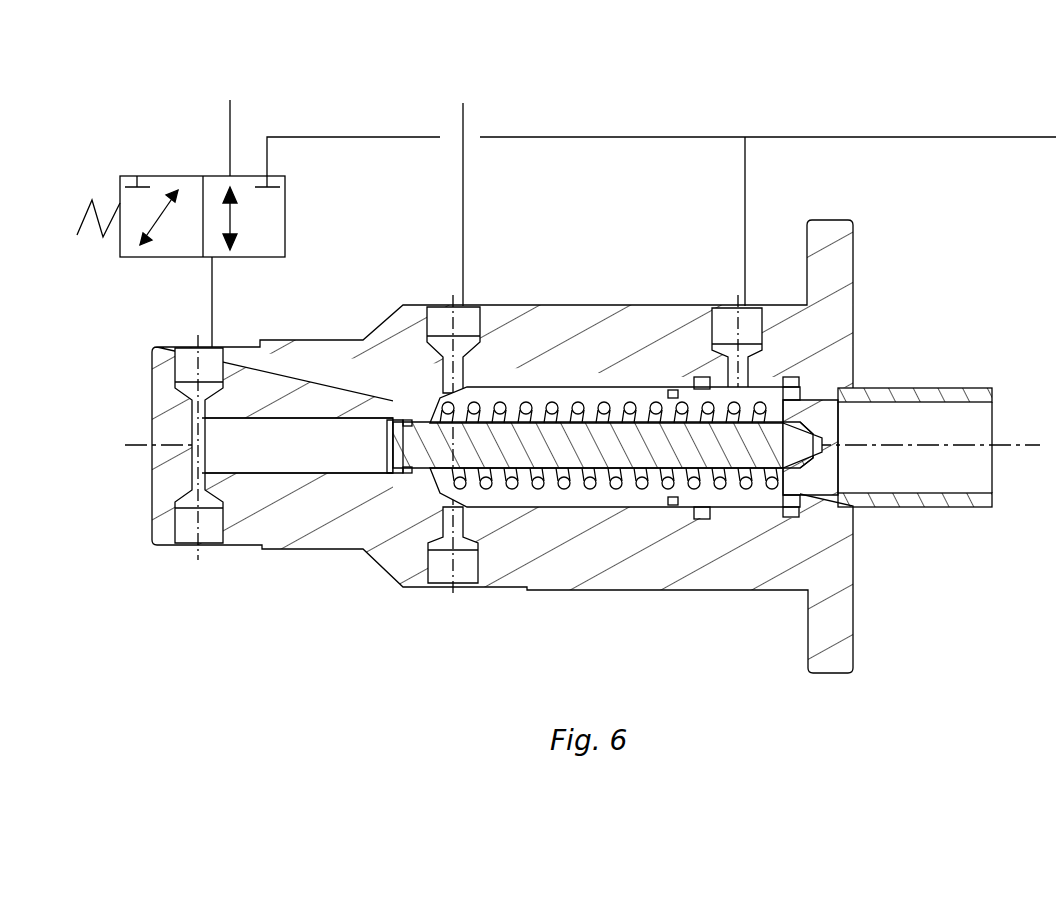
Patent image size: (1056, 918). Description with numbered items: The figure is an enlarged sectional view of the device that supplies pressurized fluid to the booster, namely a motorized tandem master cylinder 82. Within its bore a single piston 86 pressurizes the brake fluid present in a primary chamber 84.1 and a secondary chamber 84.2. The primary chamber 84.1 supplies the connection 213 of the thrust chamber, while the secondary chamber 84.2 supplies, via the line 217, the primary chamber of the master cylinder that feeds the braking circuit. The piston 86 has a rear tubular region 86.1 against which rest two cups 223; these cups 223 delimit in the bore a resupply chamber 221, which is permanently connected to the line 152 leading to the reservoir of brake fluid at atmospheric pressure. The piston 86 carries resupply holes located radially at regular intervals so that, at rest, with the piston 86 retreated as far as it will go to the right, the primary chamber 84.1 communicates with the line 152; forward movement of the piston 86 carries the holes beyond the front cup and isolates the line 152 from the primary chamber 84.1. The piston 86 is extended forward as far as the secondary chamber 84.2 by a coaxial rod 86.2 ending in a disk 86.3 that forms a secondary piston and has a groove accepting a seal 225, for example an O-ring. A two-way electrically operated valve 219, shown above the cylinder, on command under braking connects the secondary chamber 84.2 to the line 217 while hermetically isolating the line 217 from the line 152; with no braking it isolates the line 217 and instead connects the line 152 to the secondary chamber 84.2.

The master cylinder 82 is at (600, 277).
The primary chamber 84.1 is at (600, 490).
The secondary chamber 84.2 is at (297, 445).
The piston 86 is at (938, 388).
The rear tubular region 86.1 is at (762, 510).
The coaxial rod 86.2 is at (522, 492).
The disk 86.3 is at (398, 478).
The line 152 is at (342, 138).
The connection 213 is at (464, 112).
The line 217 is at (229, 115).
The two-way electrically operated valve 219 is at (287, 235).
The resupply chamber 221 is at (733, 520).
The cups 223 is at (697, 520).
The seal 225 is at (405, 476).